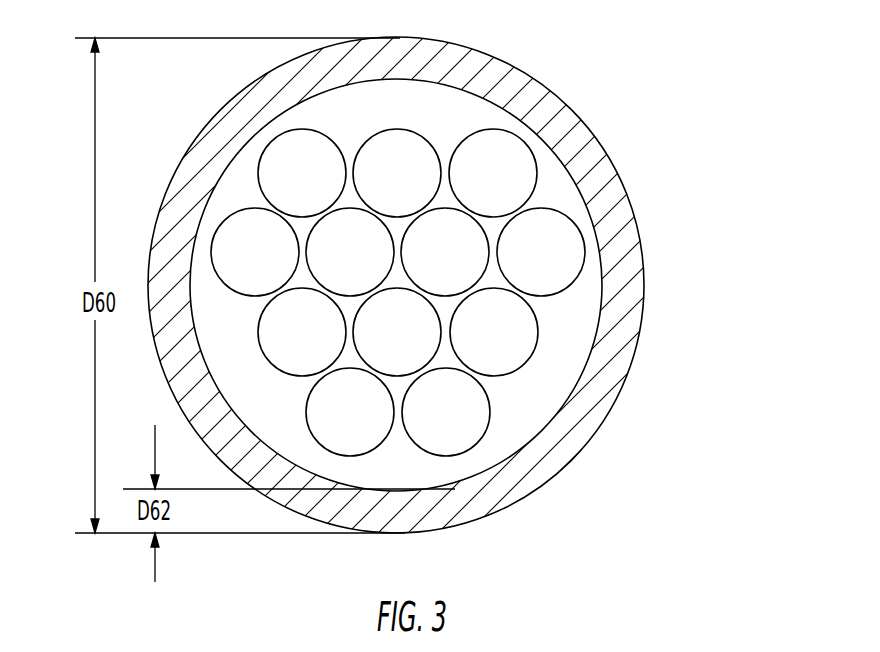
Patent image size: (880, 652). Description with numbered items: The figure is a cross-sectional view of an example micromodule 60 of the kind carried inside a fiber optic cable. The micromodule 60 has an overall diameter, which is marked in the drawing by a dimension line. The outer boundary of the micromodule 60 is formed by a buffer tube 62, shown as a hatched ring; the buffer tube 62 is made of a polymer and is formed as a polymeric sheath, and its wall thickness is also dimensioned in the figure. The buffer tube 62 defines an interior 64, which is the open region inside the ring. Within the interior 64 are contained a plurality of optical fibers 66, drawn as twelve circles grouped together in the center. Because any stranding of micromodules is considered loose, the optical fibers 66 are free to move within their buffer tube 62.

The micromodule 60 is at (440, 326).
The buffer tube 62 is at (533, 93).
The interior 64 is at (245, 189).
The optical fiber 66 is at (442, 412).